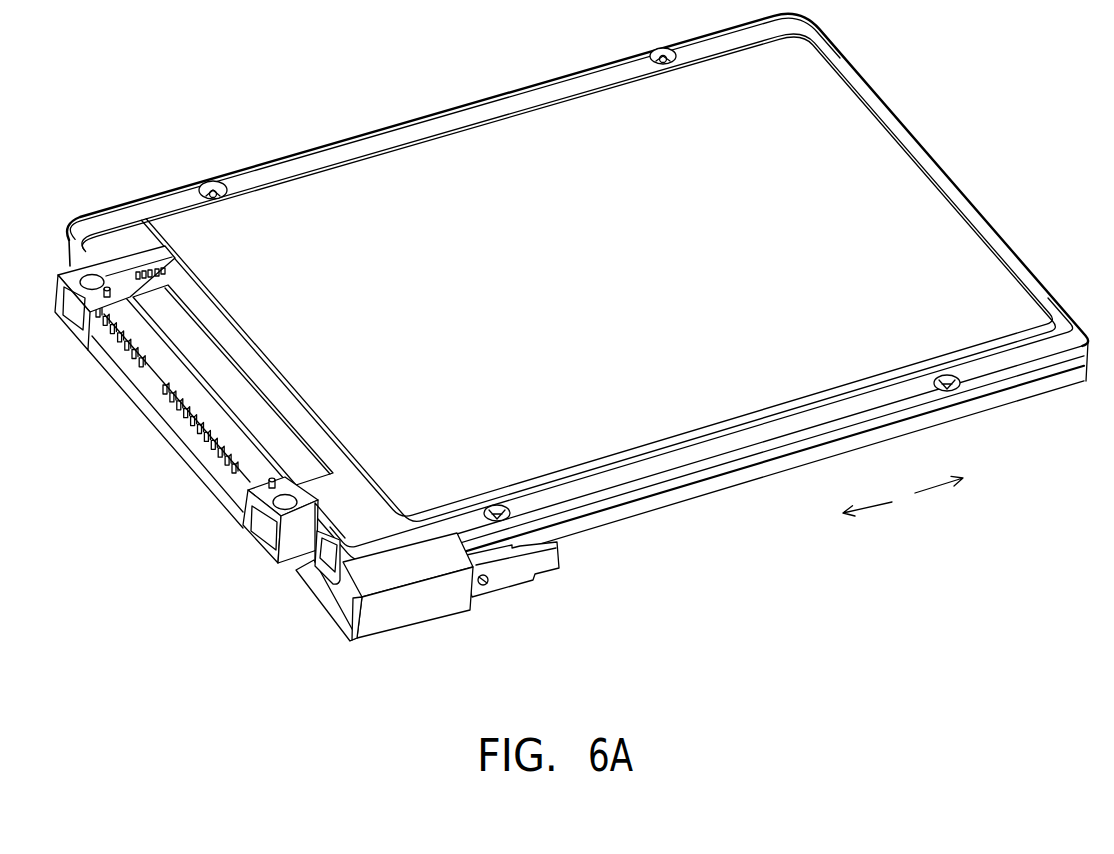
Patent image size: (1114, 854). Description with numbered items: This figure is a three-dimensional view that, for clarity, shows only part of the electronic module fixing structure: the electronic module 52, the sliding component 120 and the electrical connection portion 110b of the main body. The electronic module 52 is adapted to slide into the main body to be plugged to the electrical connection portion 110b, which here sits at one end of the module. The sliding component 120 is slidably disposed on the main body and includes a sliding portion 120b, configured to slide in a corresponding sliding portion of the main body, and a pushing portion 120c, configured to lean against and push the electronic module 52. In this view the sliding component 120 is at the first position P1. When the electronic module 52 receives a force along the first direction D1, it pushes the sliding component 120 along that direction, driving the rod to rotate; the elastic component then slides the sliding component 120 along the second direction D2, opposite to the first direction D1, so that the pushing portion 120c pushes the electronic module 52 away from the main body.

The electronic module 52 is at (898, 199).
The electrical connection portion 110b is at (176, 380).
The sliding component 120 is at (385, 622).
The sliding portion 120b is at (419, 608).
The pushing portion 120c is at (328, 565).
The first position P1 is at (325, 628).
The first direction D1 is at (865, 510).
The second direction D2 is at (937, 490).